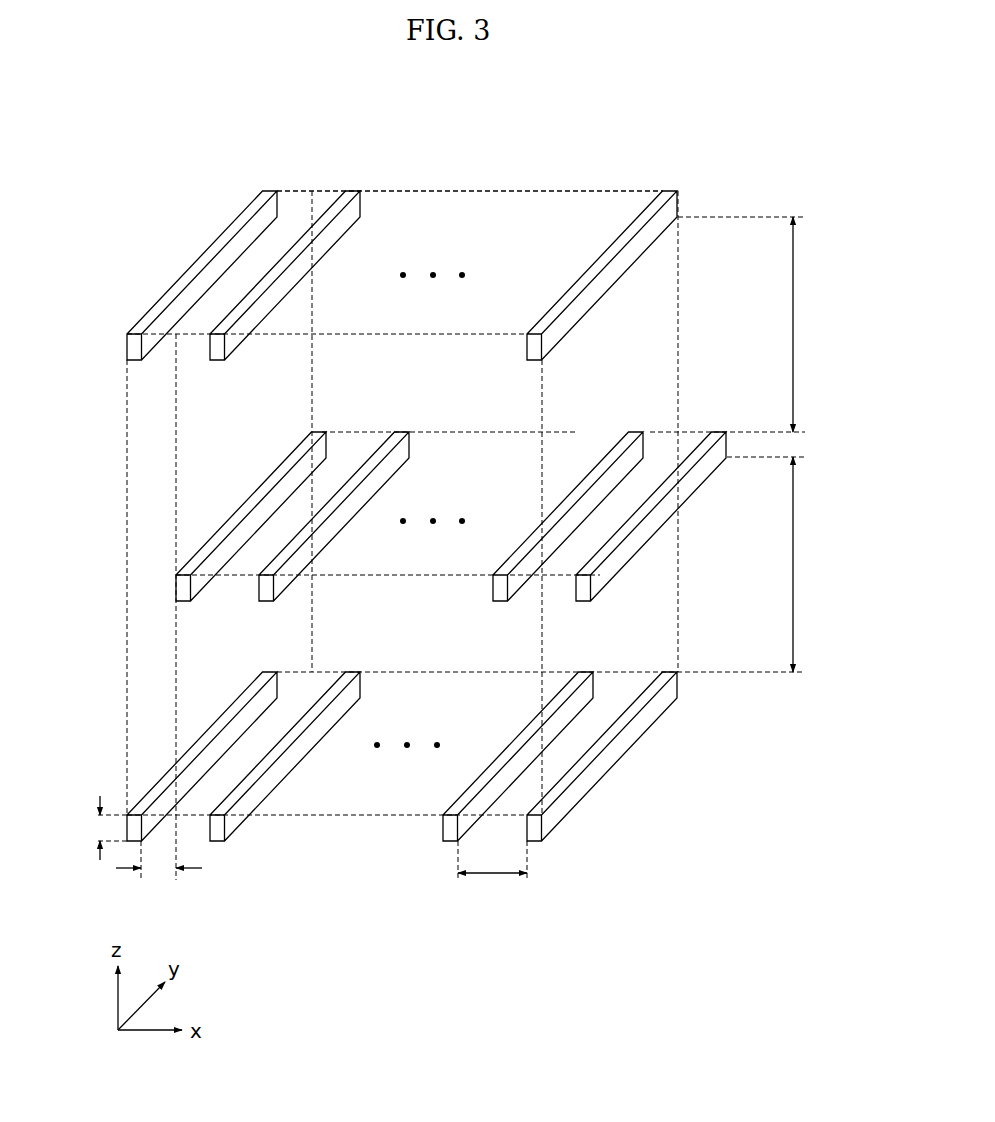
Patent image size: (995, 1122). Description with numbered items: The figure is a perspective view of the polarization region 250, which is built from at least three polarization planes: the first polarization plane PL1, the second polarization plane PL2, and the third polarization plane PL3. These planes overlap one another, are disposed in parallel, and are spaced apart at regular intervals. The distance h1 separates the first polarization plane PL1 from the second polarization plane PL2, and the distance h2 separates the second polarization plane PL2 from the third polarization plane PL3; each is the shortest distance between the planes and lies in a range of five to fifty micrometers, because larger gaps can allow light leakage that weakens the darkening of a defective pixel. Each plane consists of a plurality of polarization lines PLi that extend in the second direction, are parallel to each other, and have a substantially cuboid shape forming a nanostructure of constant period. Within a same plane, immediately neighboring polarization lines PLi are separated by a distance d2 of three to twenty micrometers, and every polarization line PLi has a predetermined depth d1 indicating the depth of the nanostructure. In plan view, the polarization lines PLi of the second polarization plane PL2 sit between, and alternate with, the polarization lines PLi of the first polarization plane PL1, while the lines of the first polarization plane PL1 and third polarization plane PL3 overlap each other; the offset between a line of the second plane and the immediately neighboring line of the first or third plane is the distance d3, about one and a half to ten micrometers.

The polarization region 250 is at (491, 104).
The polarization line PLi is at (221, 240).
The first polarization plane PL1 is at (630, 672).
The second polarization plane PL2 is at (692, 432).
The third polarization plane PL3 is at (579, 191).
The distance between first and second polarization planes h1 is at (810, 564).
The distance between second and third polarization planes h2 is at (810, 324).
The depth of polarization lines d1 is at (100, 828).
The distance between neighboring polarization lines in a same plane d2 is at (492, 870).
The distance between polarization lines of adjacent planes d3 is at (159, 856).